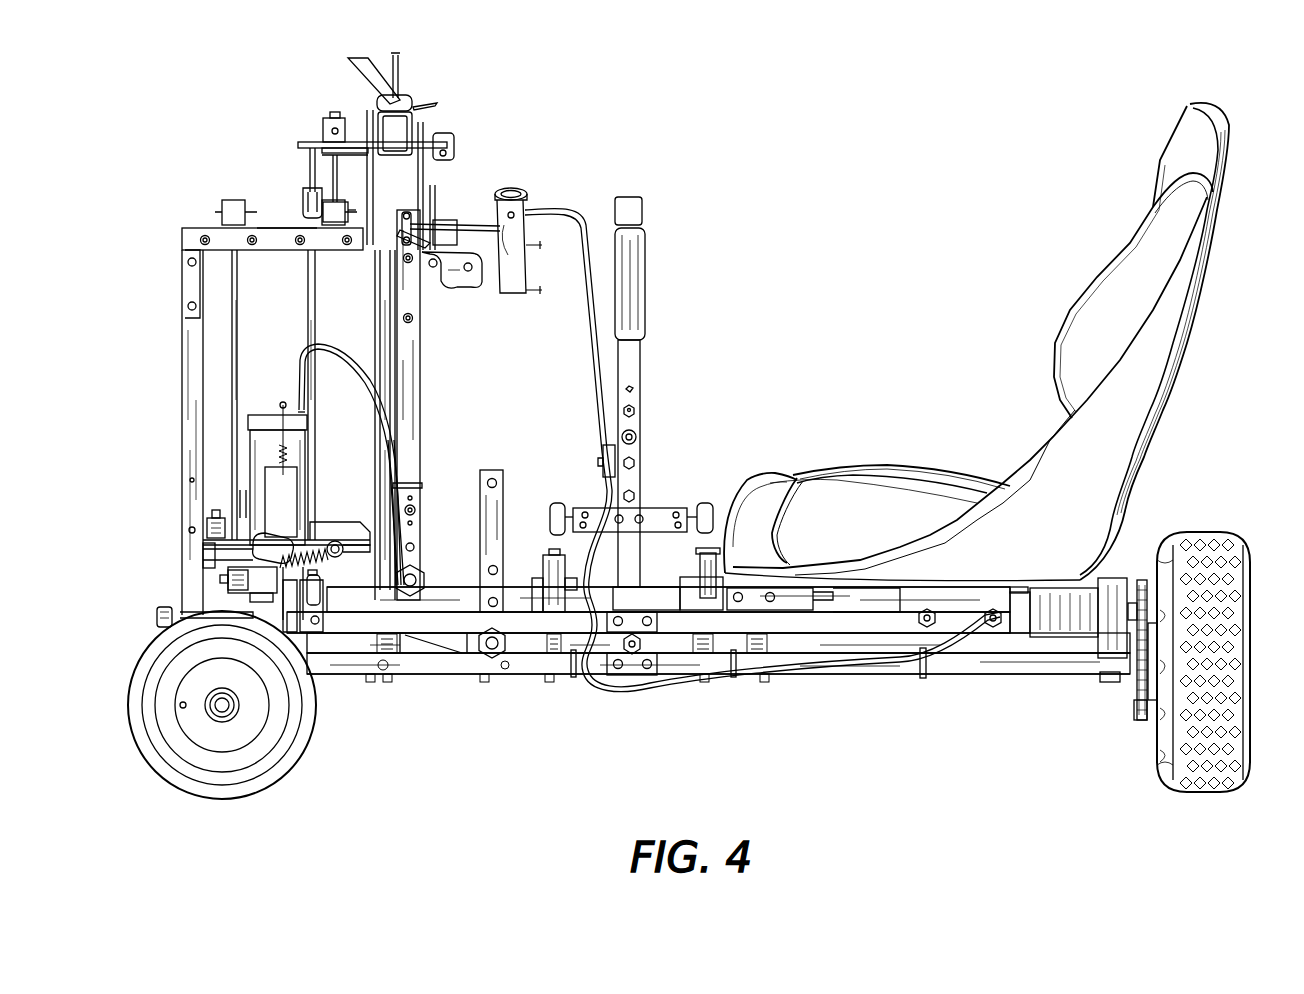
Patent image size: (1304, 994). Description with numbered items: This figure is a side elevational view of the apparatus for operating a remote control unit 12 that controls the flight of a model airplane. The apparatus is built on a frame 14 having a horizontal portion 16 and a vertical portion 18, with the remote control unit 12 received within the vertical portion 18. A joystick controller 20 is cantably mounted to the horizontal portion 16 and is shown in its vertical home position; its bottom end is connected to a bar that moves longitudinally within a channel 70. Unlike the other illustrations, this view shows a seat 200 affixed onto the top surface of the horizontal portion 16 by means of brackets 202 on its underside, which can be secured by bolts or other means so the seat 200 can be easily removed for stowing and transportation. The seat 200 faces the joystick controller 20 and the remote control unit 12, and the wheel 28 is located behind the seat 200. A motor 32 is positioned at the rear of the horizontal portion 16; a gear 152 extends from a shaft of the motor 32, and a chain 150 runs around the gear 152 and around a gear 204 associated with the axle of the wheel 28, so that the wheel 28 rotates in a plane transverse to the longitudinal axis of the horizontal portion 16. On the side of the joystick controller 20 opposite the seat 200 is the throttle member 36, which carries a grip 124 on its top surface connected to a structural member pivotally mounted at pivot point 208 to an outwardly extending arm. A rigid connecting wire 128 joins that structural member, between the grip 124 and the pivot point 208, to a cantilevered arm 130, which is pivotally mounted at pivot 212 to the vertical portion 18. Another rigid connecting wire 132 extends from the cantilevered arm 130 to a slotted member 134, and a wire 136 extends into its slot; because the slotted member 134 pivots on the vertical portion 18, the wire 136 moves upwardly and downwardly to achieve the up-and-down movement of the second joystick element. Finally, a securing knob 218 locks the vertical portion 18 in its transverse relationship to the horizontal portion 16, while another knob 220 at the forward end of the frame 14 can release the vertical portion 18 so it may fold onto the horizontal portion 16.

The remote control unit 12 is at (407, 100).
The frame 14 is at (780, 625).
The horizontal portion 16 is at (684, 623).
The vertical portion 18 is at (420, 387).
The joystick controller 20 is at (644, 383).
The third wheel 28 is at (1215, 537).
The motor 32 is at (1071, 630).
The throttle member 36 is at (527, 212).
The channel 70 is at (462, 600).
The grip 124 is at (512, 195).
The rigid connecting wire 128 is at (487, 225).
The cantilevered arm 130 is at (405, 210).
The rigid connecting wire 132 is at (387, 195).
The slotted member 134 is at (440, 133).
The wire 136 is at (430, 145).
The chain 150 is at (1140, 690).
The gear 152 is at (1139, 580).
The seat 200 is at (1147, 383).
The brackets 202 is at (658, 587).
The gear 204 is at (1145, 723).
The pivot point 208 is at (500, 262).
The pivot 212 is at (359, 425).
The securing knob 218 is at (418, 560).
The knob 220 is at (166, 605).